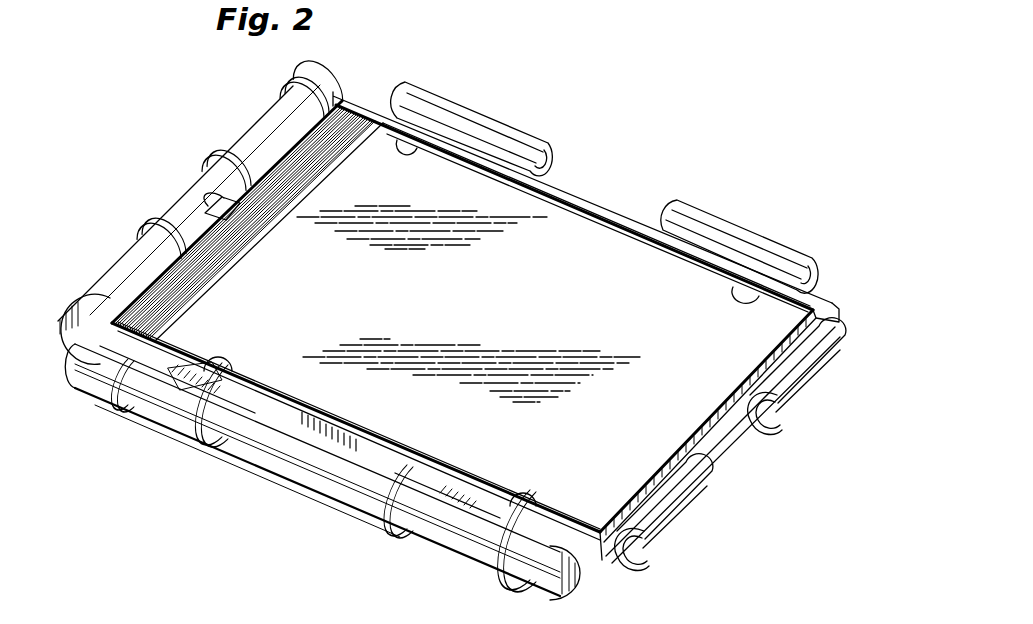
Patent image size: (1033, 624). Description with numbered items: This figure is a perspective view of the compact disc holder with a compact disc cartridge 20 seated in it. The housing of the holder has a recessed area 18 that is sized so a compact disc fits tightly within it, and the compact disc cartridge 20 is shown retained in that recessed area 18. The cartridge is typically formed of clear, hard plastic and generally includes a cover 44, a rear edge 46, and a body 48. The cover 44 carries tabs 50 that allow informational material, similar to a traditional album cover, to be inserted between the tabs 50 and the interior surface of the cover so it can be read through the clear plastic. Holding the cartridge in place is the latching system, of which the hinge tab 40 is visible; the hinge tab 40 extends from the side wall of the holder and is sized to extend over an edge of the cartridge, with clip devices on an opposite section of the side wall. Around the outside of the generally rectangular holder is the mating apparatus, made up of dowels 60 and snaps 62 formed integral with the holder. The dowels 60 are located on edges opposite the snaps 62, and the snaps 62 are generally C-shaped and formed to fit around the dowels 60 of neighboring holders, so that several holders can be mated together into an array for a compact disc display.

The recessed area 18 is at (610, 0).
The compact disc cartridge 20 is at (548, 233).
The hinge tab 40 is at (225, 196).
The cover 44 is at (730, 440).
The rear edge 46 is at (300, 103).
The body 48 is at (260, 393).
The tabs 50 is at (432, 128).
The dowels 60 is at (190, 138).
The snaps 62 is at (672, 0).